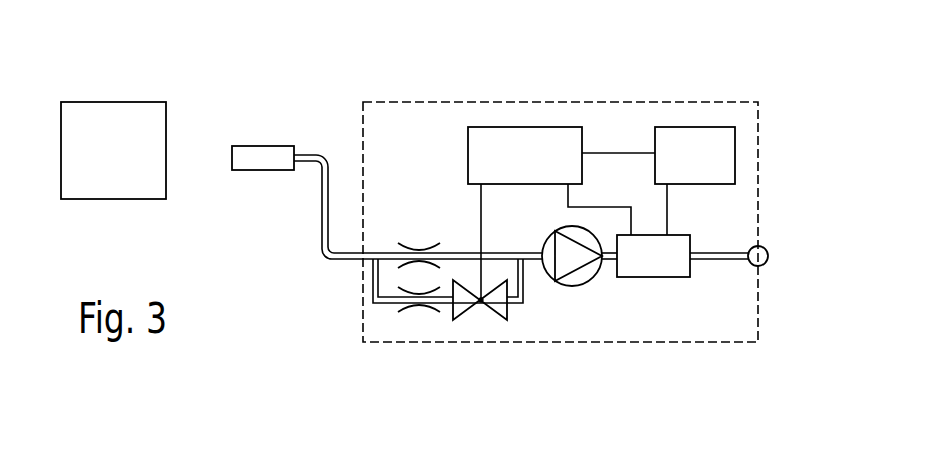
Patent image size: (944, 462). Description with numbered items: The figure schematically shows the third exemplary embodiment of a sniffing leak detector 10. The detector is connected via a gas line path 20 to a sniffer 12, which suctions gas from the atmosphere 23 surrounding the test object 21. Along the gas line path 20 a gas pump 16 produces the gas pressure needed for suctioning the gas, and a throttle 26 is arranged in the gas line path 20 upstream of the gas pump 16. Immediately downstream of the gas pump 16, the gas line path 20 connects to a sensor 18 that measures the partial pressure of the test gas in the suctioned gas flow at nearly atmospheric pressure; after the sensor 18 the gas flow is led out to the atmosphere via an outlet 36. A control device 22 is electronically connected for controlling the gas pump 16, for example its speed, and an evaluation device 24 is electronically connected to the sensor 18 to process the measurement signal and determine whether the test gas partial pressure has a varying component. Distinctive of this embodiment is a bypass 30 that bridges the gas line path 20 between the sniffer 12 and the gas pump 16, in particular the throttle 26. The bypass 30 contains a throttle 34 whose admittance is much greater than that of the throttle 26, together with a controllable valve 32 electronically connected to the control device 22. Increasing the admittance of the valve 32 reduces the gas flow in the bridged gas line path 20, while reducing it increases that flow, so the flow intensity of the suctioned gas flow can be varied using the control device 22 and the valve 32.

The sniffing leak detector 10 is at (452, 72).
The sniffer 12 is at (279, 148).
The gas pump 16 is at (568, 263).
The sensor 18 is at (657, 265).
The gas line path 20 is at (348, 257).
The test object 21 is at (102, 167).
The control device 22 is at (557, 142).
The atmosphere 23 is at (228, 228).
The evaluation device 24 is at (705, 142).
The throttle 26 is at (426, 220).
The bypass 30 is at (387, 300).
The controllable valve 32 is at (478, 332).
The throttle 34 is at (415, 333).
The outlet 36 is at (767, 248).